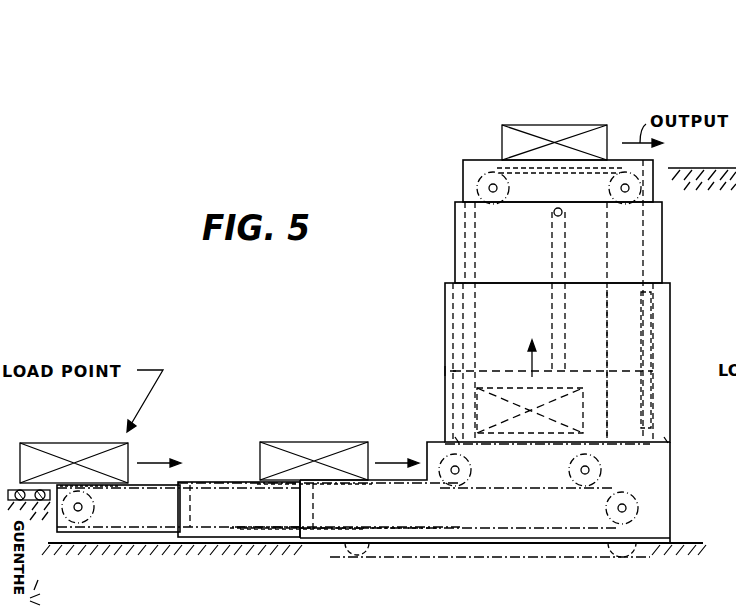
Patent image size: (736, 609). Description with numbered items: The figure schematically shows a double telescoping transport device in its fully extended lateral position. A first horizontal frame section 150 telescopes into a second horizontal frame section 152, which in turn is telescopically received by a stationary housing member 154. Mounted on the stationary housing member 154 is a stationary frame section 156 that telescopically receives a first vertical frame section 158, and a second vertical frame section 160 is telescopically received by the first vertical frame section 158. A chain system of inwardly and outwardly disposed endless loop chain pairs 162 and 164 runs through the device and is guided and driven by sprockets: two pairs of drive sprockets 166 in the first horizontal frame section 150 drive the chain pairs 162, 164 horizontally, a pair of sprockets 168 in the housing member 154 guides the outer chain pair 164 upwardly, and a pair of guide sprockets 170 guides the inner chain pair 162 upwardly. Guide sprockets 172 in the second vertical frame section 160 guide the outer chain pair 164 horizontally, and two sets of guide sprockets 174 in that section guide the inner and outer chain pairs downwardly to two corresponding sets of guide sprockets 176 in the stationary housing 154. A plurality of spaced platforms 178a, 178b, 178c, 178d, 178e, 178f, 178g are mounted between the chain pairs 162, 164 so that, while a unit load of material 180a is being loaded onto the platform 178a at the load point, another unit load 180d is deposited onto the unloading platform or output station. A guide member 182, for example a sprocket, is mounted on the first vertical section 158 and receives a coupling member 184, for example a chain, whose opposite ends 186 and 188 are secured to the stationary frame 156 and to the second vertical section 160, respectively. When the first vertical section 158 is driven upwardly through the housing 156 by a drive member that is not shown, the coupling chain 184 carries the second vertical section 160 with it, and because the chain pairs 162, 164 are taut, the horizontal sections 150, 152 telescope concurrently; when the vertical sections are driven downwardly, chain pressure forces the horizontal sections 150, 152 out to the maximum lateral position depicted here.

The first horizontal frame section 150 is at (152, 512).
The second horizontal frame section 152 is at (218, 497).
The stationary housing member 154 is at (673, 473).
The stationary frame section 156 is at (673, 333).
The first vertical frame section 158 is at (664, 232).
The second vertical frame section 160 is at (668, 169).
The inner chain pair 162 is at (607, 295).
The outer chain pair 164 is at (446, 372).
The drive sprockets 166 is at (80, 522).
The sprockets 168 is at (446, 452).
The guide sprockets 170 is at (611, 455).
The guide sprockets 172 is at (480, 183).
The guide sprockets 174 is at (620, 180).
The guide sprockets 176 is at (636, 520).
The platform 178a is at (135, 483).
The platform 178b is at (368, 486).
The platform 178c is at (560, 440).
The platform 178d is at (526, 177).
The platform 178e is at (657, 301).
The platform 178f is at (530, 530).
The platform 178g is at (260, 530).
The unit load of material 180a is at (61, 443).
The unit load of material 180d is at (562, 125).
The guide member 182 is at (553, 215).
The coupling member 184 is at (550, 262).
The end of chain 186 is at (568, 283).
The end of chain 188 is at (552, 368).